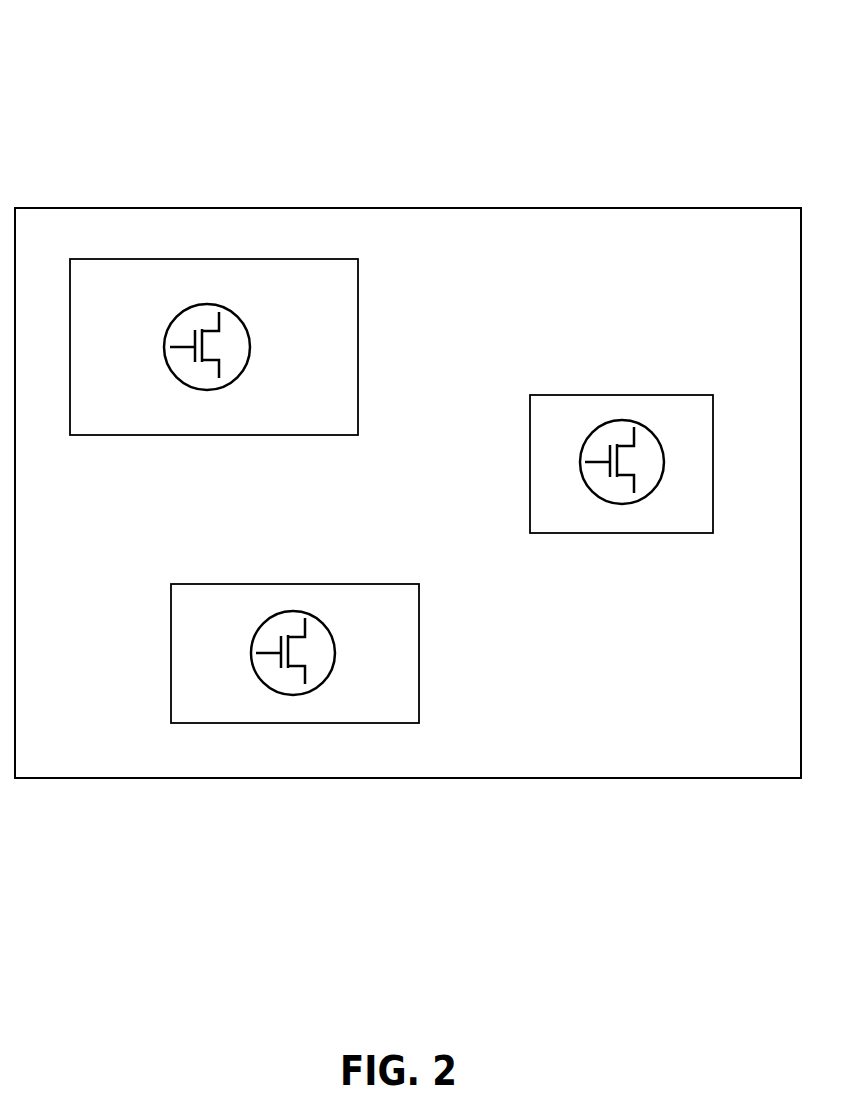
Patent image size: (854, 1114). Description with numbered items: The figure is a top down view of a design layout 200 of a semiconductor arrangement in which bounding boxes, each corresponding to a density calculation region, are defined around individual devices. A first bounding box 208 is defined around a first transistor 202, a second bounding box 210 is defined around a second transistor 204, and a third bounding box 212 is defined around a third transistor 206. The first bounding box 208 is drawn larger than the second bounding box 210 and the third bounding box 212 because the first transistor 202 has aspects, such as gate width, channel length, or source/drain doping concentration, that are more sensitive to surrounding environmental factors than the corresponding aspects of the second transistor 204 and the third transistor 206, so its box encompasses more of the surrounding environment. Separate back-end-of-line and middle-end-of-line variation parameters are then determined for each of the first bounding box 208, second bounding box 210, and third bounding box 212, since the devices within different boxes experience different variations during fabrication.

The design layout 200 is at (160, 72).
The first transistor 202 is at (237, 313).
The second transistor 204 is at (622, 419).
The third transistor 206 is at (323, 615).
The first bounding box 208 is at (357, 325).
The second bounding box 210 is at (592, 533).
The third bounding box 212 is at (198, 584).